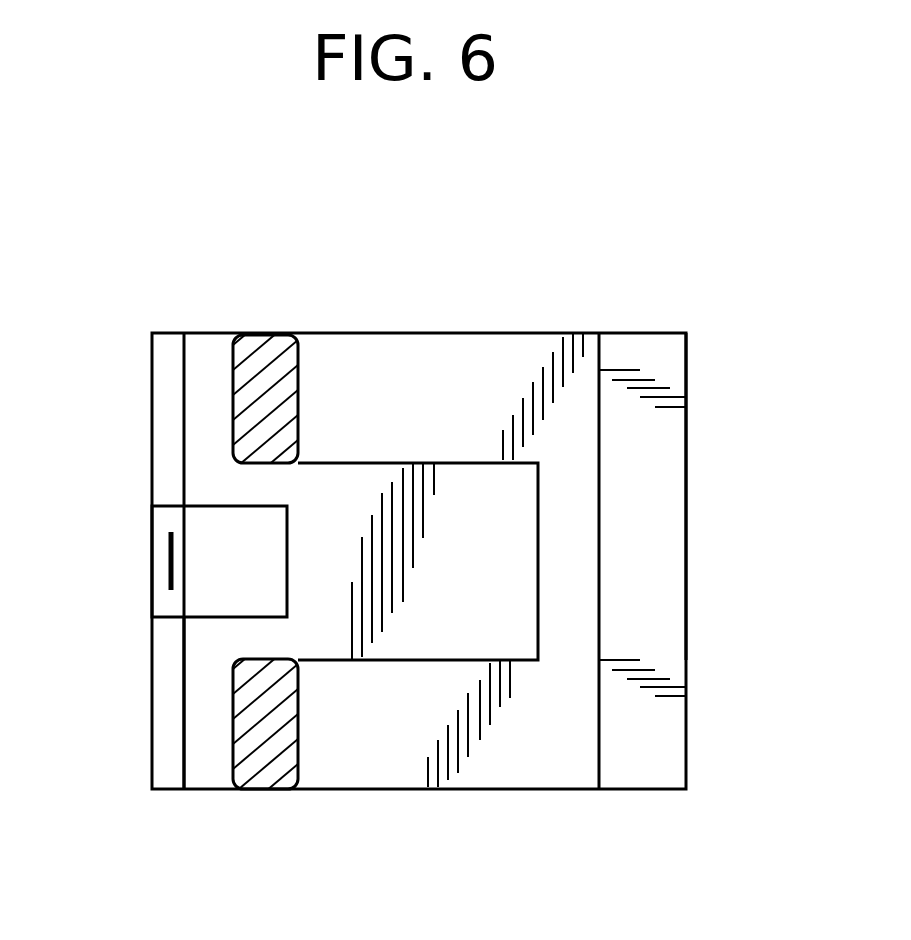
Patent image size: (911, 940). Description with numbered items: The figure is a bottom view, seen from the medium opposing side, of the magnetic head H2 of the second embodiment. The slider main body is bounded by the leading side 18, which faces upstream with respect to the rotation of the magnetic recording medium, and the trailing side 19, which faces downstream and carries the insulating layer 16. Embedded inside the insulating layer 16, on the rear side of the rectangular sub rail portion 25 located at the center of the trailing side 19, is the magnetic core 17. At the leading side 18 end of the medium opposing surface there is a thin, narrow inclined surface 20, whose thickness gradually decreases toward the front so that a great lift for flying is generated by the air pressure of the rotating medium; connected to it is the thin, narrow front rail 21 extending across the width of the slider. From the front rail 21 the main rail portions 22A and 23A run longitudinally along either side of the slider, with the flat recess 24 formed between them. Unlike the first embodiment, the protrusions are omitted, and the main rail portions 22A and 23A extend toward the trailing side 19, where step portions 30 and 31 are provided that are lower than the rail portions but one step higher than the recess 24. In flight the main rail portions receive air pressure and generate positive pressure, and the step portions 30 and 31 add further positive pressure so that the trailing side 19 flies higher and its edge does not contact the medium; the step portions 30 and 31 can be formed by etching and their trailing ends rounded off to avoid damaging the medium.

The magnetic head H2 is at (609, 316).
The insulating layer 16 is at (168, 390).
The magnetic core 17 is at (168, 577).
The leading side 18 is at (686, 492).
The trailing side 19 is at (205, 683).
The inclined surface 20 is at (650, 737).
The front rail 21 is at (568, 580).
The main rail portion 22A is at (505, 353).
The main rail portion 23A is at (542, 737).
The recess 24 is at (407, 628).
The sub rail portion 25 is at (226, 512).
The step portion 30 is at (275, 348).
The step portion 31 is at (267, 760).